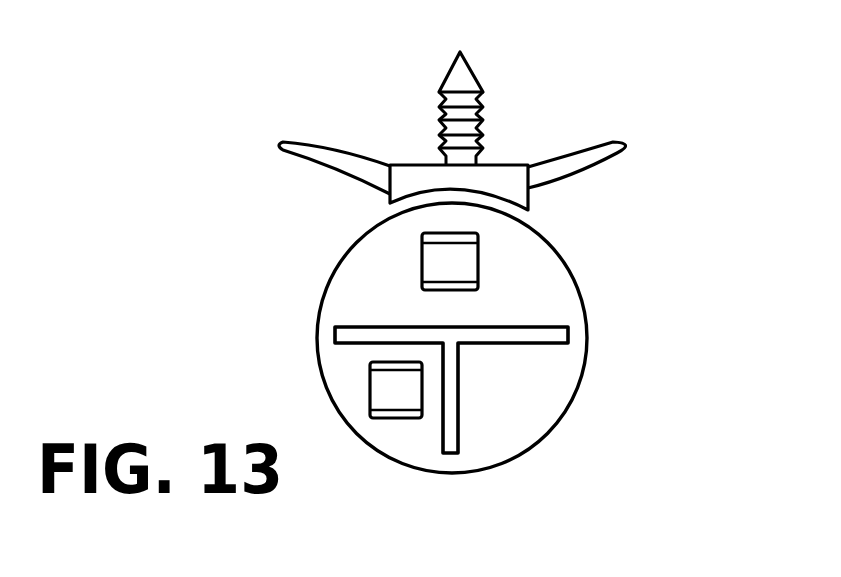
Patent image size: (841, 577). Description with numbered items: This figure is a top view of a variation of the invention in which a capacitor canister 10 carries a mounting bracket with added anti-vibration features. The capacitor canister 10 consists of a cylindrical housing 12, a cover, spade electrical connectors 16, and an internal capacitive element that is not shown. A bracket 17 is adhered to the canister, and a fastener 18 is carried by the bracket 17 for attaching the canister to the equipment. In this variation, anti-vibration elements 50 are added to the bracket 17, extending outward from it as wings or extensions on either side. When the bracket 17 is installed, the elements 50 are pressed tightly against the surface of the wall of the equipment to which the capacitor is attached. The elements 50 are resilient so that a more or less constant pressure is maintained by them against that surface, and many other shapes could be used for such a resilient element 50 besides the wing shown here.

The capacitor canister 10 is at (469, 277).
The cylindrical housing 12 is at (585, 303).
The spade electrical connectors 16 is at (433, 270).
The bracket 17 is at (413, 173).
The fastener 18 is at (482, 113).
The anti-vibration elements 50 is at (320, 155).